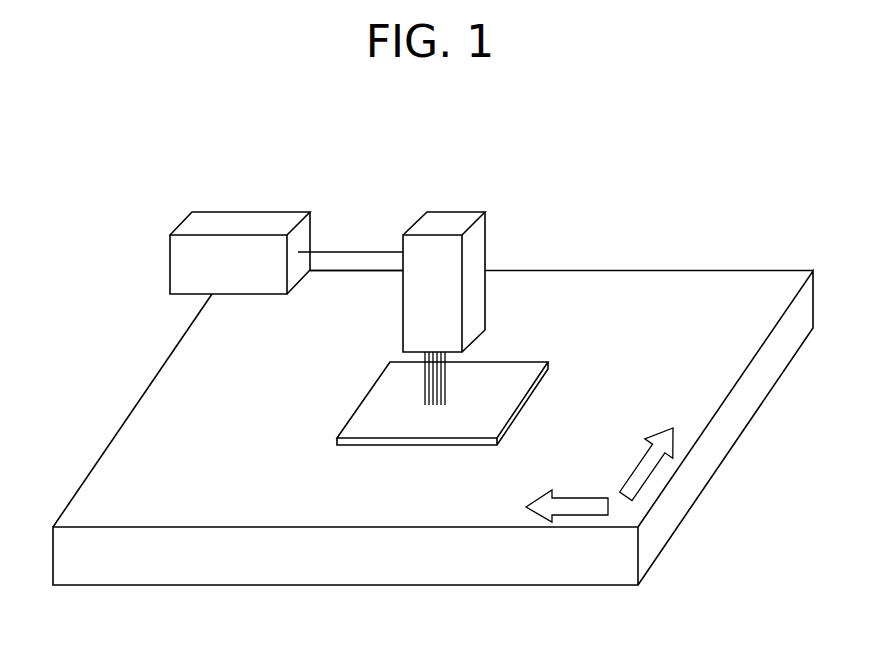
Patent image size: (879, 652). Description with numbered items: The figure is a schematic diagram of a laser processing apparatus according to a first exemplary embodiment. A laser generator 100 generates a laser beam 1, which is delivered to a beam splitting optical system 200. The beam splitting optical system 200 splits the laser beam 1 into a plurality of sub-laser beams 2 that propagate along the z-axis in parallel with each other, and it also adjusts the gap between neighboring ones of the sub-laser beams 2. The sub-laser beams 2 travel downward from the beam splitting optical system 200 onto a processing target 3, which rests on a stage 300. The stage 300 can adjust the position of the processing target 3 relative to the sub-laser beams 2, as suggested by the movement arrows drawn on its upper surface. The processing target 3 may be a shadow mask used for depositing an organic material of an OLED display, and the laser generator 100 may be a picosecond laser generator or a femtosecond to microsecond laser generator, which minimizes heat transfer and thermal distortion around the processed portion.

The laser generator 100 is at (246, 220).
The beam splitting optical system 200 is at (451, 220).
The stage 300 is at (703, 283).
The laser beam 1 is at (354, 250).
The sub-laser beams 2 is at (445, 376).
The processing target 3 is at (393, 420).